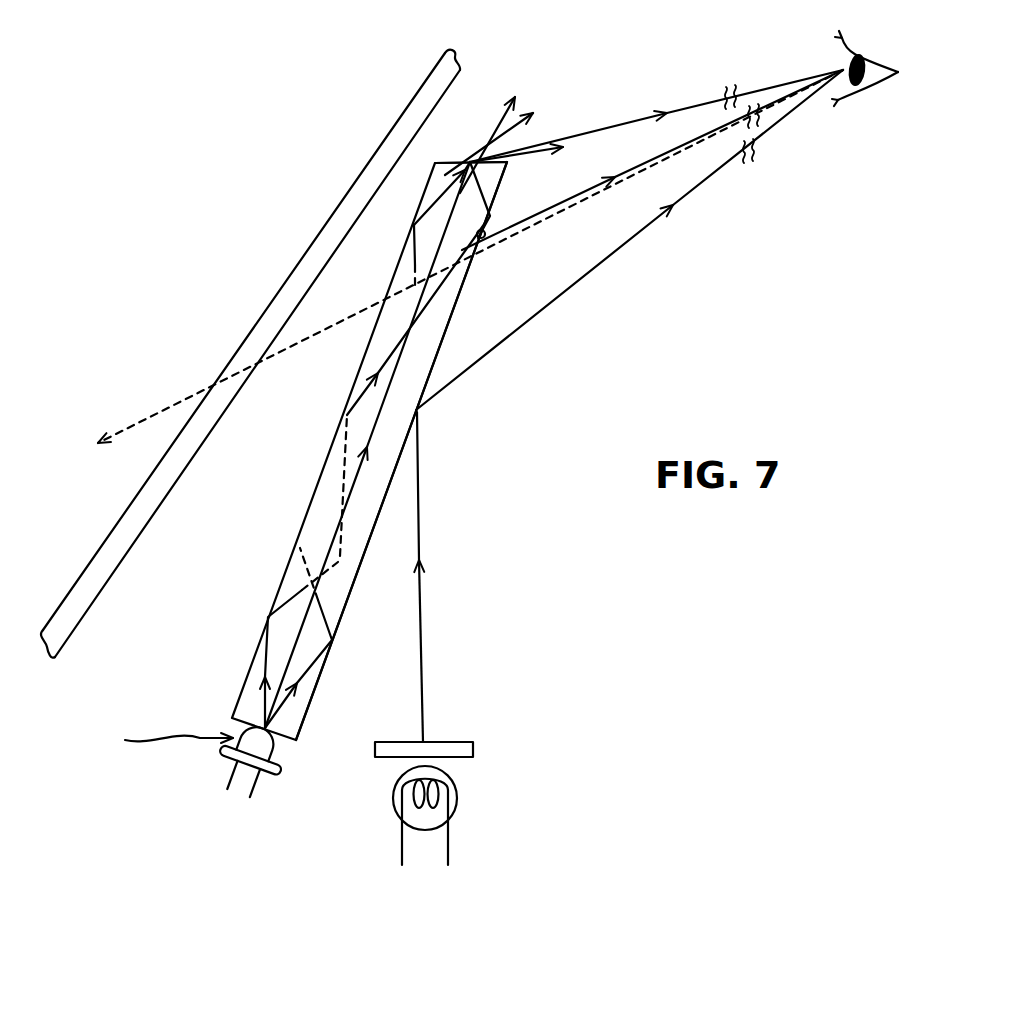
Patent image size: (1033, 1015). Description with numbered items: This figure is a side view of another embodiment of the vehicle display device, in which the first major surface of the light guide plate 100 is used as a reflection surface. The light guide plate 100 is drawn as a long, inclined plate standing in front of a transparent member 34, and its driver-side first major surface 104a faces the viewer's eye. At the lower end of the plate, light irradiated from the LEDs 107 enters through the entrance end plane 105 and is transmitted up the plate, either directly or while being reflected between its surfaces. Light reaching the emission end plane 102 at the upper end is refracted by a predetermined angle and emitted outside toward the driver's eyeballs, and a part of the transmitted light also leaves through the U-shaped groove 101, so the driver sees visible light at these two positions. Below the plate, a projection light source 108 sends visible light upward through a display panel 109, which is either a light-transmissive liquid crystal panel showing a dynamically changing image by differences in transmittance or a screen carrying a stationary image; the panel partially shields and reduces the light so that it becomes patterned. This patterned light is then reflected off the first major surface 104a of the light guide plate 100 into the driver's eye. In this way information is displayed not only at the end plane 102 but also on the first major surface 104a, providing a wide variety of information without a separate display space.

The transparent combiner plate 34 is at (372, 160).
The light guide plate 100 is at (283, 577).
The U-shaped groove 101 is at (486, 237).
The emission end plane 102 is at (455, 160).
The first major surface 104a is at (343, 605).
The entrance end plane 105 is at (287, 748).
The LEDs 107 is at (152, 740).
The projection light source 108 is at (458, 798).
The display panel 109 is at (483, 758).